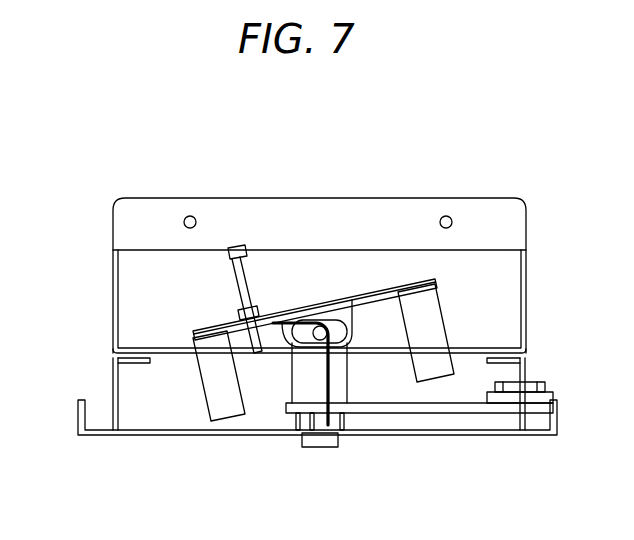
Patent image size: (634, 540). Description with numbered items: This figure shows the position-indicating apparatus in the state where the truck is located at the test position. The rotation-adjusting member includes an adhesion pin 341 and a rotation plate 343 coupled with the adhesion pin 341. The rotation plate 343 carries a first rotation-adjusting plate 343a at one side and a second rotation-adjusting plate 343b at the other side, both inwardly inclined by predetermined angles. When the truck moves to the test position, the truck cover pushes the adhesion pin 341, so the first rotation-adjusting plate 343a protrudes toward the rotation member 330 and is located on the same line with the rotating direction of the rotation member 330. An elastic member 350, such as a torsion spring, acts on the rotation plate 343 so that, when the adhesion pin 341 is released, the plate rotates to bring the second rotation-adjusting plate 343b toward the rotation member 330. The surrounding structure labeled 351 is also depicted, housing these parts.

The housing 351 is at (280, 275).
The adhesion pin 341 is at (237, 247).
The rotation plate 343 is at (370, 293).
The first rotation-adjusting plate 343a is at (200, 387).
The second rotation-adjusting plate 343b is at (432, 318).
The elastic member 350 is at (330, 378).
The rotation member 330 is at (460, 413).